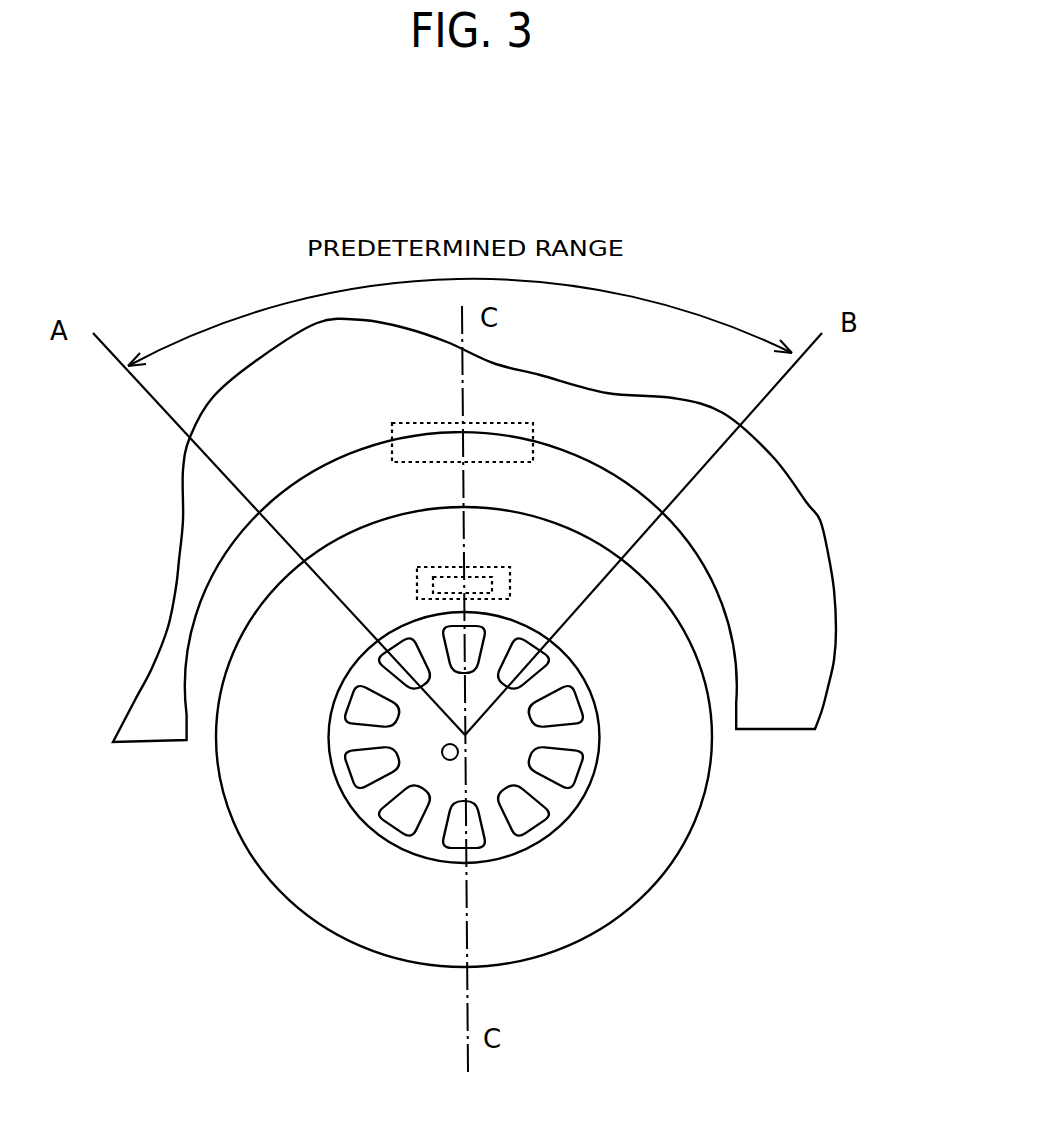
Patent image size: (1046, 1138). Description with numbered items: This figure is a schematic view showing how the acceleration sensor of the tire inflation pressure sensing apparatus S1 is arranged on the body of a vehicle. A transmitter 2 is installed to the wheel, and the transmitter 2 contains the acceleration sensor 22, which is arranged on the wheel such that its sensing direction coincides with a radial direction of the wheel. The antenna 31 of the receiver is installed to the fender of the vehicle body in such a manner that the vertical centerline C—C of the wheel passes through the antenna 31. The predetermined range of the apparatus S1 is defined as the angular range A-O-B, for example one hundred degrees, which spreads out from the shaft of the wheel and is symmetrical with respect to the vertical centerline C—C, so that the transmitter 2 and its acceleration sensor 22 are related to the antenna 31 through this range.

The tire inflation pressure sensing apparatus S1 is at (823, 178).
The antenna of the receiver 31 is at (533, 441).
The transmitter 2 is at (446, 568).
The acceleration sensor 22 is at (463, 591).